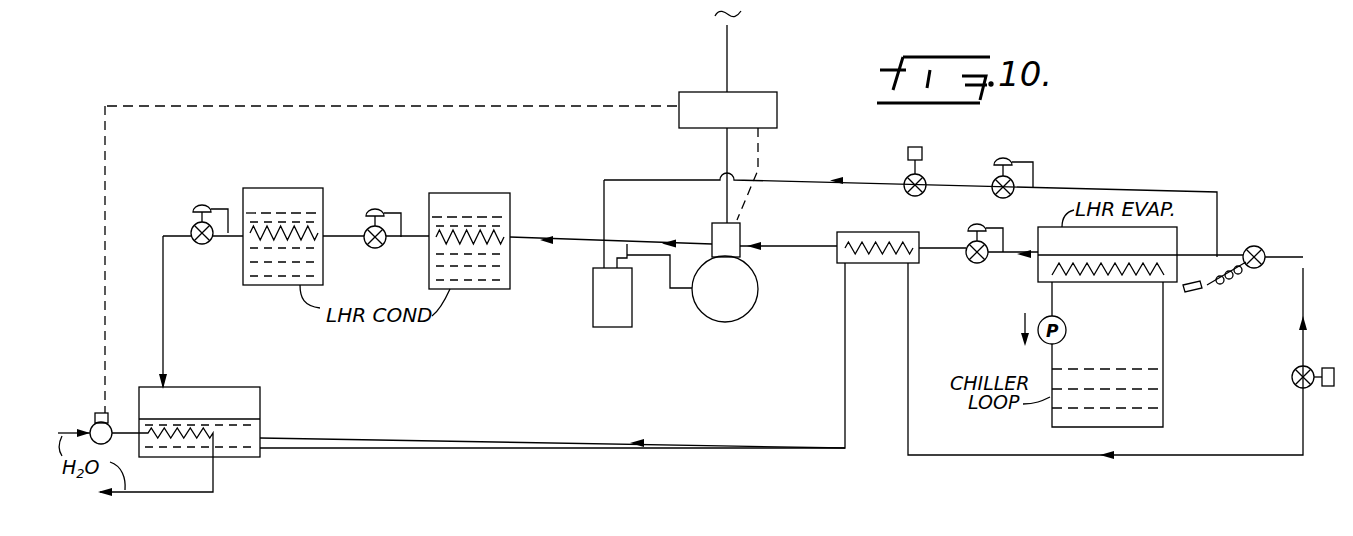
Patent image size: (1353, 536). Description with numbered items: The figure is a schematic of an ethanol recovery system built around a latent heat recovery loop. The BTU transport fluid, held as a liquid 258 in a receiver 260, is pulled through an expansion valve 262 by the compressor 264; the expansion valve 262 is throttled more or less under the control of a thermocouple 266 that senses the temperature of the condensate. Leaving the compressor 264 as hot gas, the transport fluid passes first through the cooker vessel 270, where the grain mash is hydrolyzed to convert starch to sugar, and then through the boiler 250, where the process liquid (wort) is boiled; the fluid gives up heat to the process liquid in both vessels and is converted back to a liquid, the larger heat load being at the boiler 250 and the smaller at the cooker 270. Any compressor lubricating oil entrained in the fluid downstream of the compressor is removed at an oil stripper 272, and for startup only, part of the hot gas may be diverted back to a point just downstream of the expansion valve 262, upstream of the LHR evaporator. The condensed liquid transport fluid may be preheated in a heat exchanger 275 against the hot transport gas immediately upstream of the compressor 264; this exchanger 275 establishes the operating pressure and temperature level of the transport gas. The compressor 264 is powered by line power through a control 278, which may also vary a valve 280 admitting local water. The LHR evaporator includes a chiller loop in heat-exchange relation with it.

The boiler 250 is at (290, 188).
The liquid transport fluid 258 is at (262, 418).
The receiver 260 is at (238, 387).
The expansion valve 262 is at (1262, 246).
The compressor 264 is at (722, 322).
The thermocouple 266 is at (1192, 292).
The cooker vessel 270 is at (465, 193).
The oil stripper 272 is at (600, 328).
The heat exchanger 275 is at (881, 265).
The control 278 is at (741, 92).
The valve 280 is at (84, 419).